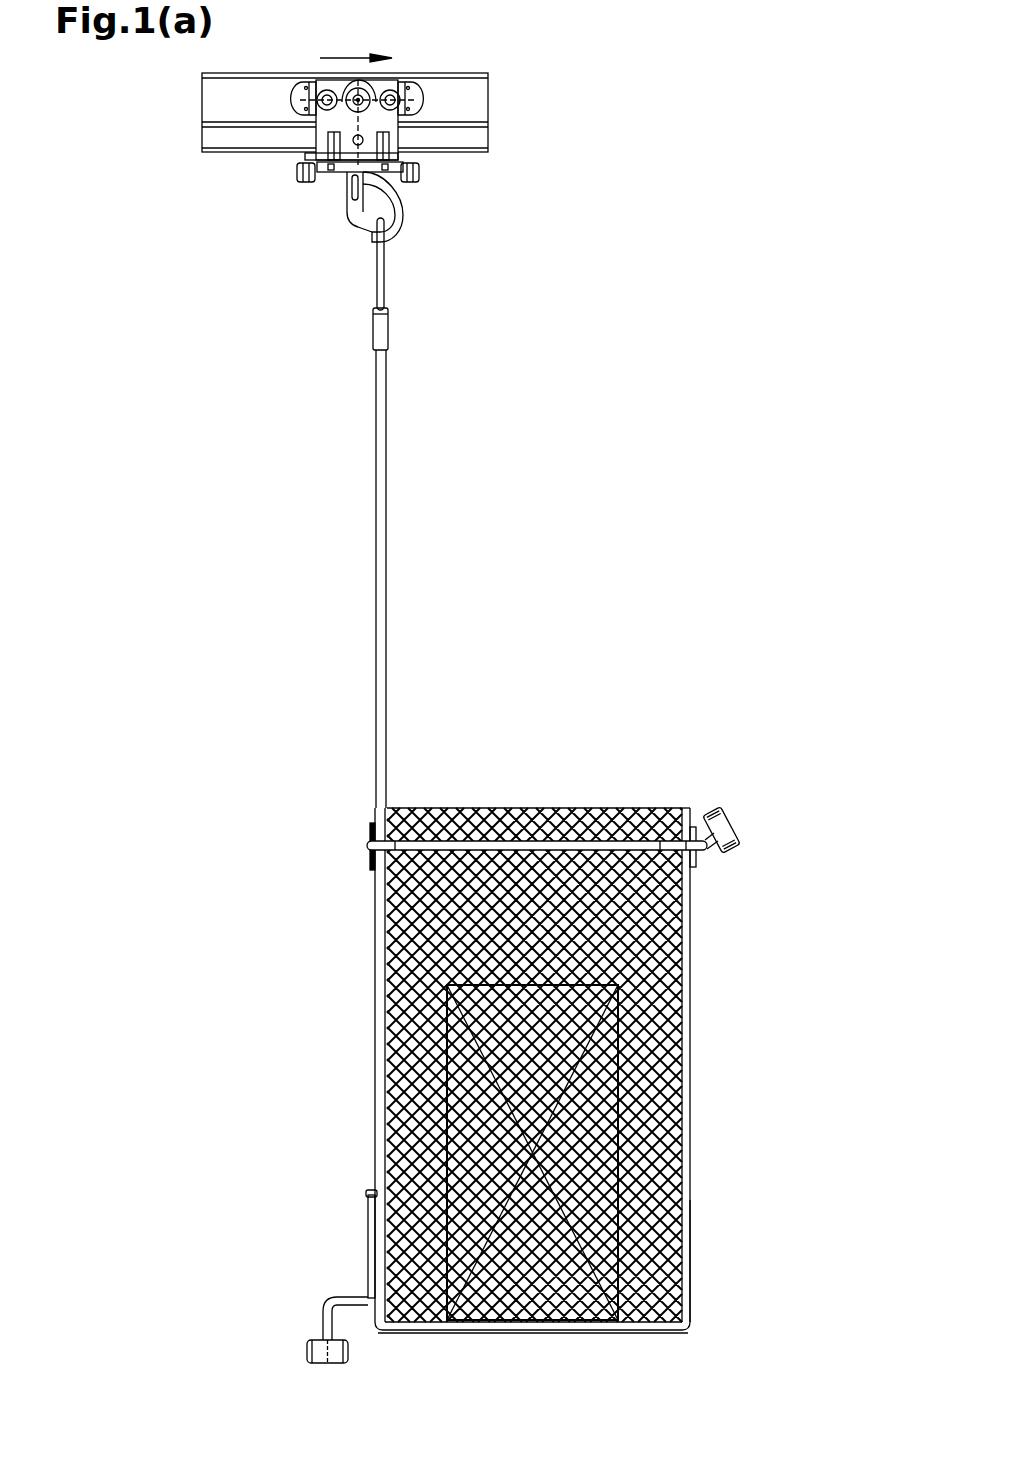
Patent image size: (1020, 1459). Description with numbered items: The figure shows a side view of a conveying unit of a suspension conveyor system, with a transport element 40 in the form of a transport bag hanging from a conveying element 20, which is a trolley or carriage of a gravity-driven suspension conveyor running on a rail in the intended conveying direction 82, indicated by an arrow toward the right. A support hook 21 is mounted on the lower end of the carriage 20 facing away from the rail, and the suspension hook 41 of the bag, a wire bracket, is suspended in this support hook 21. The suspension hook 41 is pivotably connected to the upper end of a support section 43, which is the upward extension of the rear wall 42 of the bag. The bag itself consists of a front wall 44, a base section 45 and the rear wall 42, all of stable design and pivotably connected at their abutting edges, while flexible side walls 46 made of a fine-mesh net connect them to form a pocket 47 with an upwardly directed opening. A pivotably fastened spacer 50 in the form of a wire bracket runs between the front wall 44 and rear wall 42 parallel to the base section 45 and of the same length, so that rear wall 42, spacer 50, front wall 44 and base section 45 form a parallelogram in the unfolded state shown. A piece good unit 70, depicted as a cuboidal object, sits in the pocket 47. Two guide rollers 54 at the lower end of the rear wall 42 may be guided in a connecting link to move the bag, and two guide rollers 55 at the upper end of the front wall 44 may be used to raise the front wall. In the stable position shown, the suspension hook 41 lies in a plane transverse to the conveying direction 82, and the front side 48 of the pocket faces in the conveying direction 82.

The conveying element 20 is at (379, 90).
The conveying direction 82 is at (360, 58).
The support hook 21 is at (355, 212).
The suspension hook 41 is at (380, 258).
The support section 43 is at (381, 427).
The transport element 40 is at (350, 815).
The pocket 47 is at (533, 1046).
The rear wall 42 is at (378, 960).
The front side 48 is at (690, 1138).
The front wall 44 is at (690, 1188).
The base section 45 is at (632, 1328).
The side walls 46 is at (653, 948).
The piece good unit 70 is at (410, 1090).
The spacer 50 is at (402, 848).
The guide rollers 55 is at (732, 835).
The guide rollers 54 is at (310, 1345).